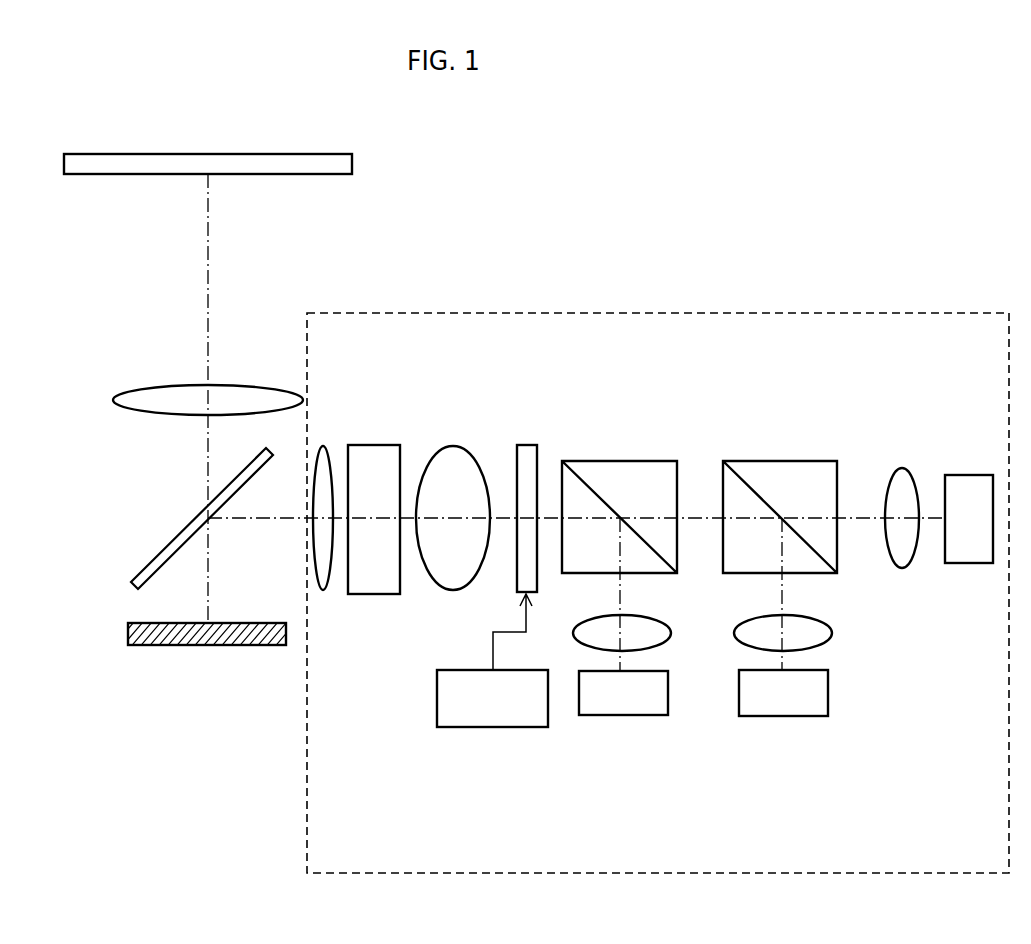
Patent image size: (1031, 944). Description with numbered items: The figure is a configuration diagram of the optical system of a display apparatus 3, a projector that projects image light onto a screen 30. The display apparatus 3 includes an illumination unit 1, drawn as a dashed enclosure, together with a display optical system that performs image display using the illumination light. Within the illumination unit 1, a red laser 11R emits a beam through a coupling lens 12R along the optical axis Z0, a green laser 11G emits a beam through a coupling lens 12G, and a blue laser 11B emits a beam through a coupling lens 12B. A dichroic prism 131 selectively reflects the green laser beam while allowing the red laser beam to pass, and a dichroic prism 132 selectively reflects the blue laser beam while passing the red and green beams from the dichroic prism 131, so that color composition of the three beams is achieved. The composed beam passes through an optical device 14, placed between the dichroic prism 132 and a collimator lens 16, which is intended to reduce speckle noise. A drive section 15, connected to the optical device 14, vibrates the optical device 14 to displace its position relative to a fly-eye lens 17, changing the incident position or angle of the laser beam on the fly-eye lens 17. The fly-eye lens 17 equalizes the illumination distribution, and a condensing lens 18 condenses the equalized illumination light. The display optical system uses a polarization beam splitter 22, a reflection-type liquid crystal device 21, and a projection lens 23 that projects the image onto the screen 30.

The illumination unit 1 is at (600, 313).
The display apparatus 3 is at (971, 236).
The screen 30 is at (352, 164).
The projection lens 23 is at (135, 385).
The polarization beam splitter 22 is at (158, 553).
The reflection-type liquid crystal device 21 is at (180, 648).
The condensing lens 18 is at (324, 592).
The fly-eye lens 17 is at (376, 445).
The collimator lens 16 is at (452, 592).
The optical device 14 is at (525, 443).
The optical axis Z0 is at (543, 517).
The drive section 15 is at (492, 728).
The dichroic prism 132 is at (620, 460).
The dichroic prism 131 is at (780, 460).
The coupling lens 12R is at (905, 468).
The red laser 11R is at (970, 565).
The coupling lens 12B is at (668, 625).
The blue laser 11B is at (622, 716).
The coupling lens 12G is at (830, 625).
The green laser 11G is at (783, 716).